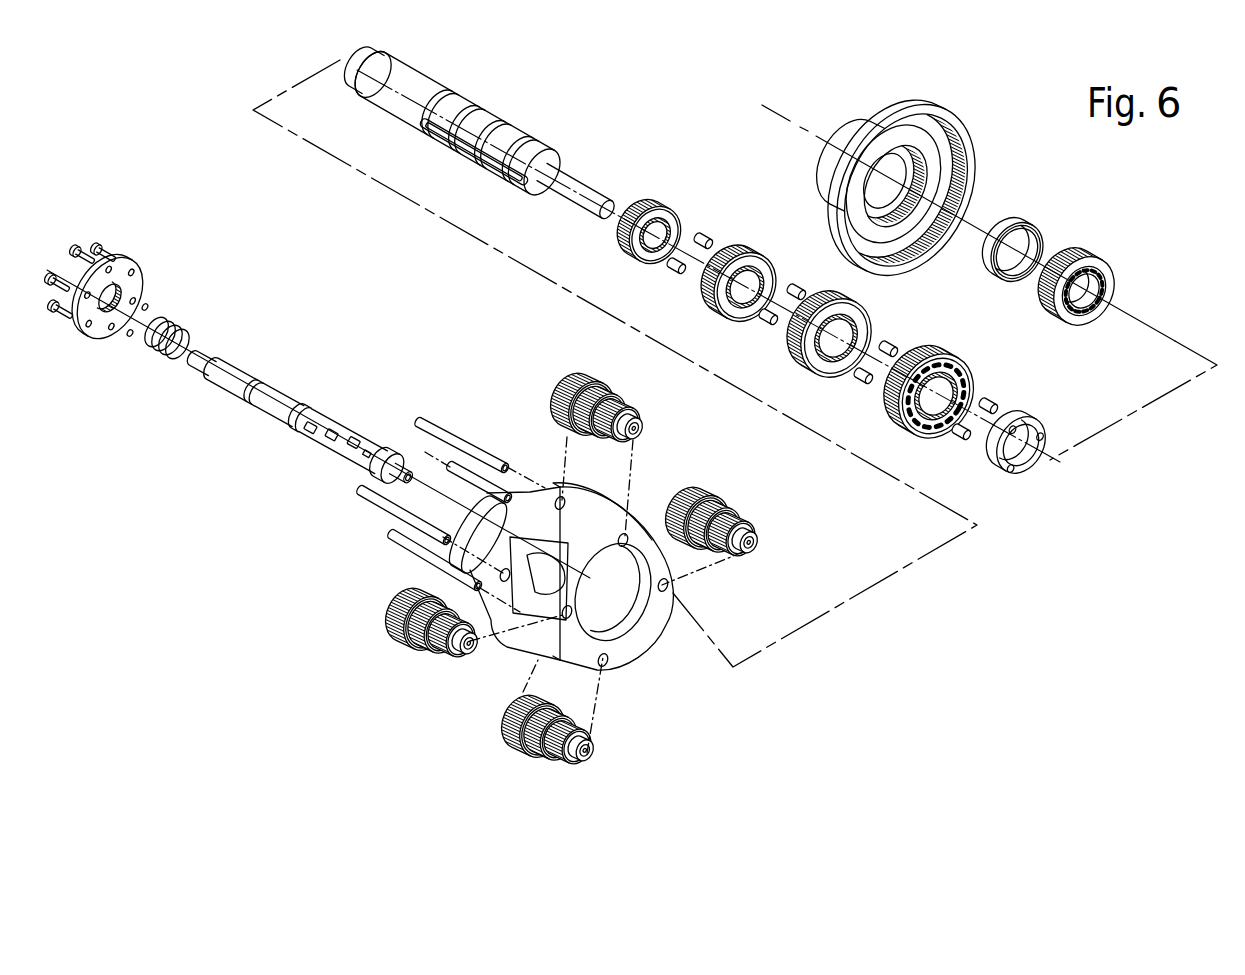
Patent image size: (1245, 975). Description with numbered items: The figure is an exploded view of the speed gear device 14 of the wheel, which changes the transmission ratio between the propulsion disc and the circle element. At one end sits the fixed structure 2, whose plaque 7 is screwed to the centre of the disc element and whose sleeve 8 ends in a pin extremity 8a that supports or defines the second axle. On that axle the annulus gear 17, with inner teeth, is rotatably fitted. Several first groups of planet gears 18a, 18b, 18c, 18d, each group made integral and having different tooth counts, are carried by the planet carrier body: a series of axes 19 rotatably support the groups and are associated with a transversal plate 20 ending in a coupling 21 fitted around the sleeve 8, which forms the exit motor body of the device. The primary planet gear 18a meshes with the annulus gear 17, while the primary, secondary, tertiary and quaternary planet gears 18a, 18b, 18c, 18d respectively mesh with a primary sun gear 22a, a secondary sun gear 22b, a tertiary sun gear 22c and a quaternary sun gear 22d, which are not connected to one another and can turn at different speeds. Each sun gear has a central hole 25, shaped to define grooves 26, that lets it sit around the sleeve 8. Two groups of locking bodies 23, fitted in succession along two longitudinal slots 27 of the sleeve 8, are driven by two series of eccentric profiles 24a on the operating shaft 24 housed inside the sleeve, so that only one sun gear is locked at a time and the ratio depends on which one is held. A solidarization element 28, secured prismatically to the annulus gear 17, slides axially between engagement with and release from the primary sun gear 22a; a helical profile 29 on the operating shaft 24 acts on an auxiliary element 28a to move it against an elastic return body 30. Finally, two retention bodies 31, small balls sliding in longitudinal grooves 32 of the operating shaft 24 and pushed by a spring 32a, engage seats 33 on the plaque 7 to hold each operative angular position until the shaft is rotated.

The fixed structure 2 is at (128, 230).
The plaque 7 is at (137, 287).
The sleeve 8 is at (480, 153).
The pin extremity 8a is at (577, 192).
The speed gear device 14 is at (737, 692).
The annulus gear 17 is at (923, 108).
The primary planet gear 18a is at (448, 657).
The secondary planet gear 18b is at (437, 653).
The tertiary planet gear 18c is at (390, 637).
The quaternary planet gear 18d is at (388, 612).
The axes 19 is at (407, 552).
The transversal plate 20 is at (558, 527).
The coupling 21 is at (487, 510).
The primary sun gear 22a is at (967, 380).
The secondary sun gear 22b is at (870, 318).
The tertiary sun gear 22c is at (713, 318).
The quaternary sun gear 22d is at (672, 236).
The locking bodies 23 is at (958, 442).
The operating shaft 24 is at (300, 393).
The eccentric profiles 24a is at (339, 439).
The central hole 25 is at (660, 203).
The grooves 26 is at (683, 230).
The longitudinal slots 27 is at (474, 151).
The solidarization element 28 is at (1100, 253).
The auxiliary element 28a is at (1023, 474).
The helical profile 29 is at (392, 468).
The elastic return body 30 is at (1020, 221).
The retention bodies 31 is at (130, 337).
The longitudinal grooves 32 is at (335, 437).
The spring 32a is at (170, 316).
The seats 33 is at (113, 310).